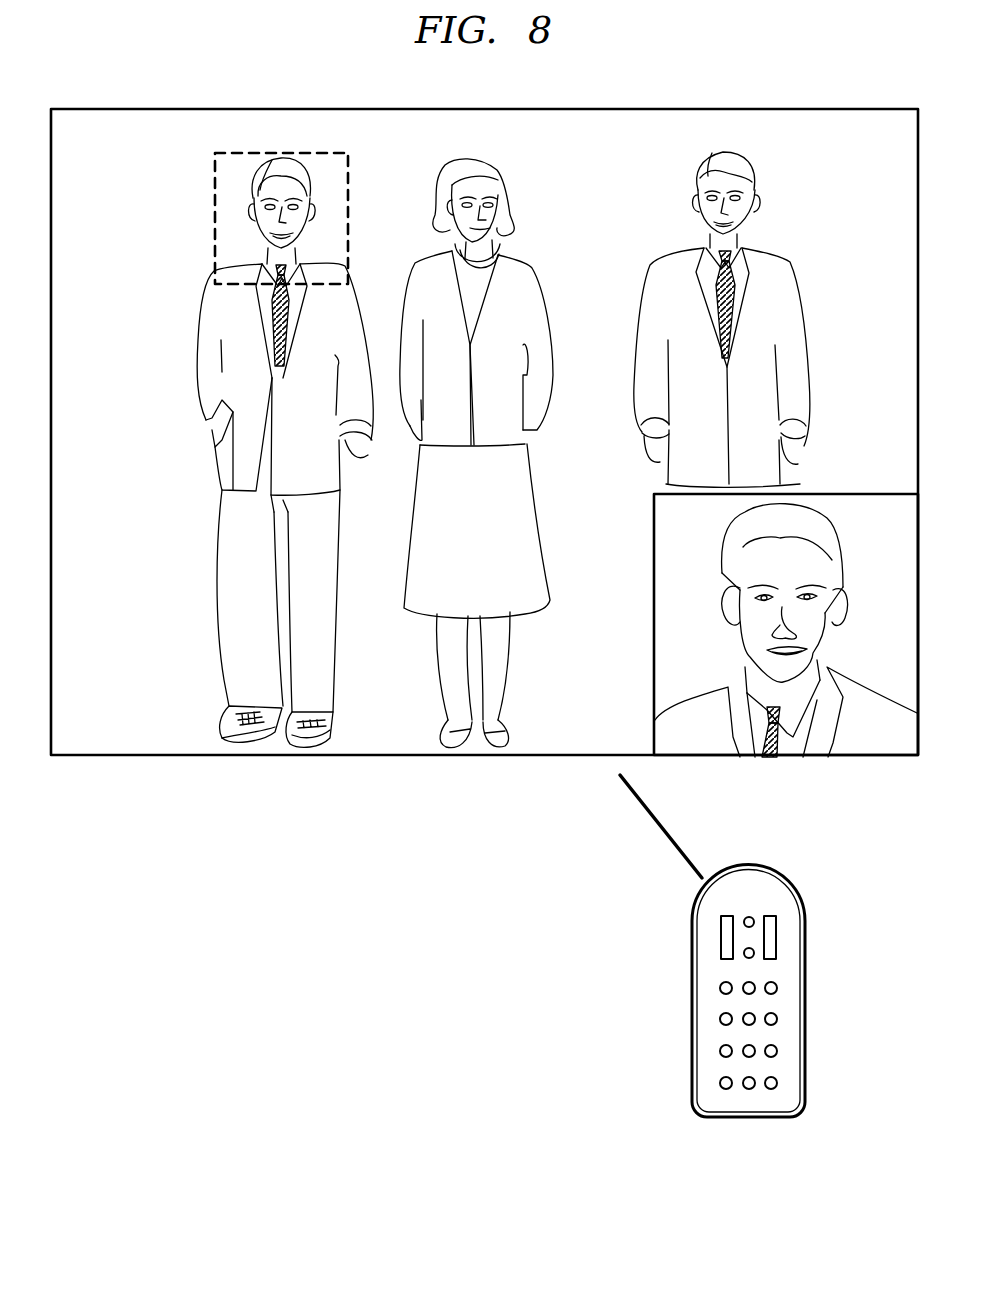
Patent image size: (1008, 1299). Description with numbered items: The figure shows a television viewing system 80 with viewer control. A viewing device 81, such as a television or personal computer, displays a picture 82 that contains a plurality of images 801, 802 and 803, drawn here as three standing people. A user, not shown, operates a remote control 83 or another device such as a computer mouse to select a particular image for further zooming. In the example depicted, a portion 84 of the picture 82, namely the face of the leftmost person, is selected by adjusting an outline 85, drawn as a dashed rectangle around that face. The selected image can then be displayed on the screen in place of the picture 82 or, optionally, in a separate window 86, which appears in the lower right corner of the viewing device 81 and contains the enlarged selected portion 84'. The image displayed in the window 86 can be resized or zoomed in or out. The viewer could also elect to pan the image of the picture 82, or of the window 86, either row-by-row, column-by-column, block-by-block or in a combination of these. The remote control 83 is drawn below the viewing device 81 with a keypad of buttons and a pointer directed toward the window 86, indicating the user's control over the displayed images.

The system 80 is at (396, 913).
The viewing device 81 is at (878, 109).
The picture 82 is at (859, 184).
The remote control 83 is at (806, 1037).
The portion 84 is at (230, 203).
The selected image displayed in window 84' is at (758, 630).
The outline 85 is at (215, 176).
The separate window 86 is at (900, 537).
The image 801 is at (302, 182).
The image 802 is at (492, 170).
The image 803 is at (740, 172).